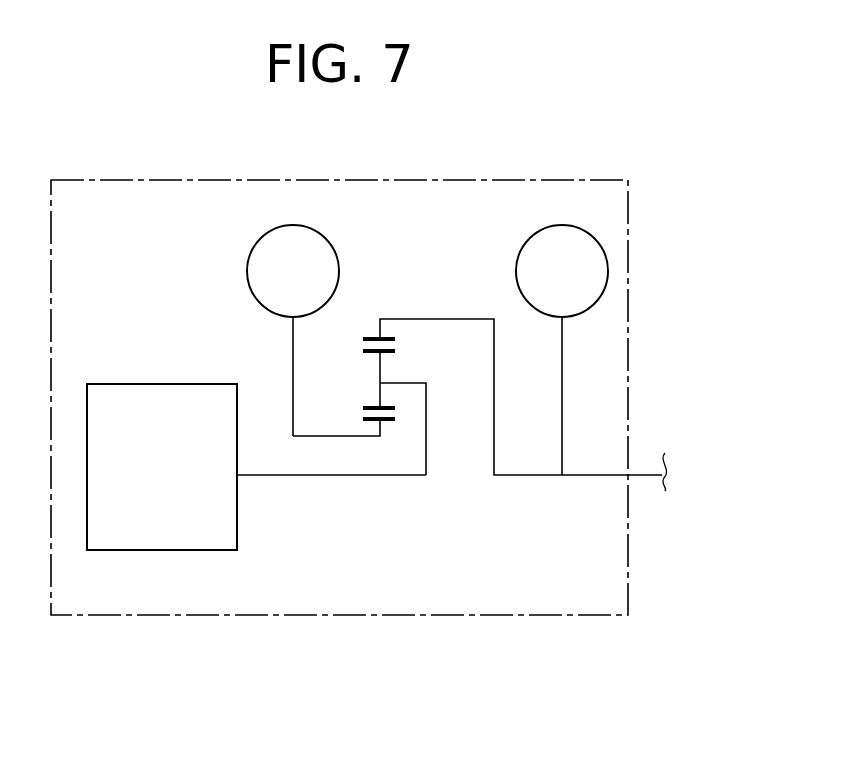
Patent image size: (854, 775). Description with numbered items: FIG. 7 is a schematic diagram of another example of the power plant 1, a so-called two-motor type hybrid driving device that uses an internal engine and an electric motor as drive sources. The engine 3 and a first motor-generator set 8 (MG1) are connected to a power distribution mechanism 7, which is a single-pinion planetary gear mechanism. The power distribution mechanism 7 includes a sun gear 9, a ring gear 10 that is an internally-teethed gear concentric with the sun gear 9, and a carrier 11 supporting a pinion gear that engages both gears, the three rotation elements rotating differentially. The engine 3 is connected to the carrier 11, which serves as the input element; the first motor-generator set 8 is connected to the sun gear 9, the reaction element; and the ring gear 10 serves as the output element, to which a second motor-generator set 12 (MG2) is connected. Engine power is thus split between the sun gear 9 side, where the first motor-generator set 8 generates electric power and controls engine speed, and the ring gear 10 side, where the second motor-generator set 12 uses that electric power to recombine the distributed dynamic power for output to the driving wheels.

The power plant 1 is at (637, 177).
The engine 3 is at (143, 384).
The power distribution mechanism 7 is at (415, 369).
The first motor-generator set 8 is at (247, 272).
The sun gear 9 is at (388, 421).
The ring gear 10 is at (397, 338).
The carrier 11 is at (410, 383).
The second motor-generator set 12 is at (567, 225).